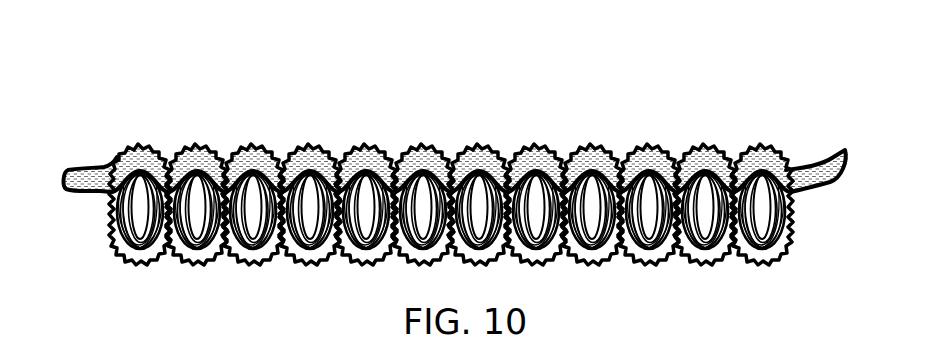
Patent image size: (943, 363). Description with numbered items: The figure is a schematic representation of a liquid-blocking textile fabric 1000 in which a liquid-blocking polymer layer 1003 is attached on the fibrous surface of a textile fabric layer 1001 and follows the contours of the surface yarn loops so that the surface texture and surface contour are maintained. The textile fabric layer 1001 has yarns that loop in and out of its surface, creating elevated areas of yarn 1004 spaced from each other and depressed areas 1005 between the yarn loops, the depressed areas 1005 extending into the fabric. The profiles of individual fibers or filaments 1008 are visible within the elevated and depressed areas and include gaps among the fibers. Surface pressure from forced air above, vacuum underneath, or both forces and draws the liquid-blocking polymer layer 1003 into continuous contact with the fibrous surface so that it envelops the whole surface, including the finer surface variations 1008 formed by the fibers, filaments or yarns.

The liquid-blocking textile fabric 1000 is at (143, 58).
The textile fabric layer 1001 is at (108, 210).
The liquid-blocking polymer layer 1003 is at (96, 176).
The elevated areas of yarn 1004 is at (588, 150).
The depressed areas 1005 is at (226, 162).
The fibers or filaments 1008 is at (705, 150).